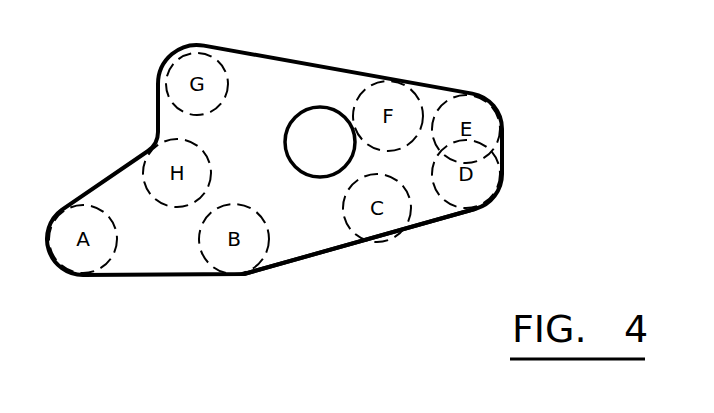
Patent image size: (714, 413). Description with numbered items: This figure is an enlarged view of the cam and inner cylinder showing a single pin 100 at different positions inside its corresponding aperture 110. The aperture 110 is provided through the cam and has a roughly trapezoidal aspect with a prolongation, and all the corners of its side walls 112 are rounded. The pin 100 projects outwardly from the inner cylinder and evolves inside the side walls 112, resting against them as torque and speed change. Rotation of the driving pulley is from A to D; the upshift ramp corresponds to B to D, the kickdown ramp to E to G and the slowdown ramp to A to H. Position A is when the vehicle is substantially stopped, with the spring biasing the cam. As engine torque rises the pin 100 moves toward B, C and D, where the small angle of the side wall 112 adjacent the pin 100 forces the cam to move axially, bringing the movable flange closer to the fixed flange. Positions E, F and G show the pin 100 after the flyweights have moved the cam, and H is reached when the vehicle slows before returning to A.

The pin 100 is at (322, 138).
The aperture 110 is at (503, 150).
The side walls 112 is at (318, 255).